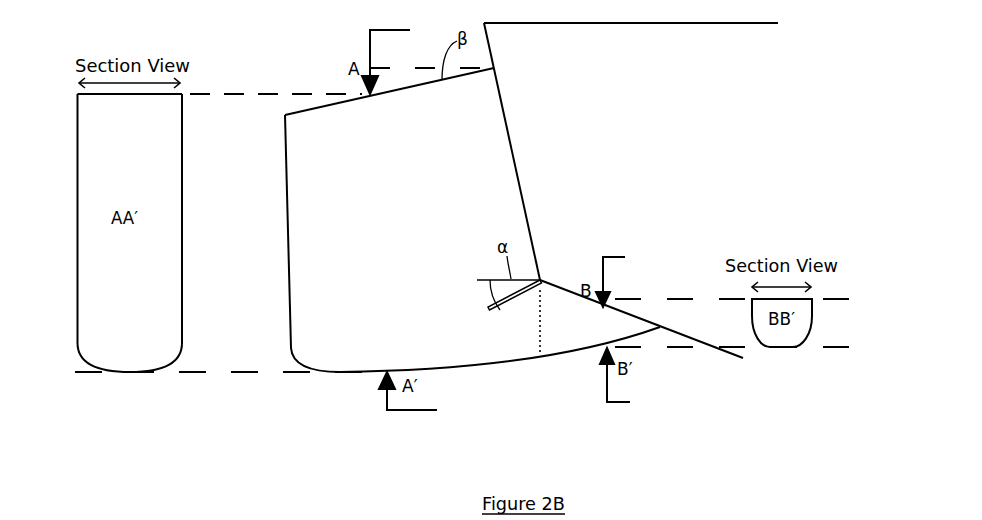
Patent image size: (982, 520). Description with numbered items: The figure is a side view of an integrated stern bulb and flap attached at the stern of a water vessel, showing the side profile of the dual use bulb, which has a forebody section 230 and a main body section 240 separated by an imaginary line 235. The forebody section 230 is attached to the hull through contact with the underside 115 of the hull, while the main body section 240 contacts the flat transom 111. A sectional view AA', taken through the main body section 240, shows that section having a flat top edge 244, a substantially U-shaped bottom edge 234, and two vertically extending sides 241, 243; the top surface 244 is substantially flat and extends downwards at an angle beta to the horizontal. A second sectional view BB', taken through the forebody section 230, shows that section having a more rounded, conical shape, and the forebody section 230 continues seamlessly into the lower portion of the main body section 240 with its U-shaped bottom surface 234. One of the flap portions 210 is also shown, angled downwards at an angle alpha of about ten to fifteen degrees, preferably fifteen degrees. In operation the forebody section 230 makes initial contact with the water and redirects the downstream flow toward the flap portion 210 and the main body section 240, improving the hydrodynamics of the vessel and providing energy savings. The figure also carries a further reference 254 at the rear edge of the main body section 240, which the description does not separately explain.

The flat transom 111 is at (517, 172).
The underside of the hull 115 is at (615, 300).
The flap portion 210 is at (497, 308).
The forebody section 230 is at (605, 330).
The substantially U-shaped bottom edge 234 is at (97, 362).
The imaginary line 235 is at (542, 335).
The main body section 240 is at (453, 246).
The vertically extending side 241 is at (207, 188).
The vertically extending side 243 is at (77, 218).
The flat top edge 244 is at (303, 108).
The rear edge of body 254 is at (291, 313).